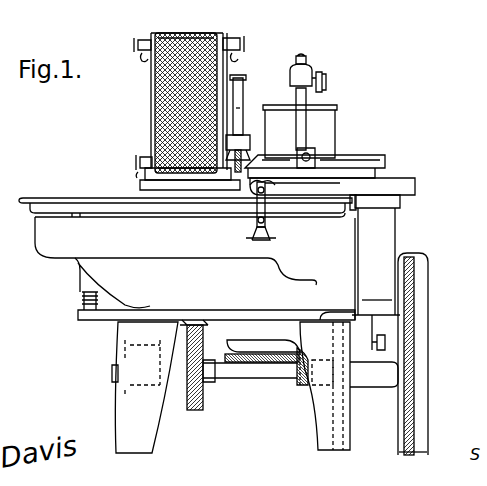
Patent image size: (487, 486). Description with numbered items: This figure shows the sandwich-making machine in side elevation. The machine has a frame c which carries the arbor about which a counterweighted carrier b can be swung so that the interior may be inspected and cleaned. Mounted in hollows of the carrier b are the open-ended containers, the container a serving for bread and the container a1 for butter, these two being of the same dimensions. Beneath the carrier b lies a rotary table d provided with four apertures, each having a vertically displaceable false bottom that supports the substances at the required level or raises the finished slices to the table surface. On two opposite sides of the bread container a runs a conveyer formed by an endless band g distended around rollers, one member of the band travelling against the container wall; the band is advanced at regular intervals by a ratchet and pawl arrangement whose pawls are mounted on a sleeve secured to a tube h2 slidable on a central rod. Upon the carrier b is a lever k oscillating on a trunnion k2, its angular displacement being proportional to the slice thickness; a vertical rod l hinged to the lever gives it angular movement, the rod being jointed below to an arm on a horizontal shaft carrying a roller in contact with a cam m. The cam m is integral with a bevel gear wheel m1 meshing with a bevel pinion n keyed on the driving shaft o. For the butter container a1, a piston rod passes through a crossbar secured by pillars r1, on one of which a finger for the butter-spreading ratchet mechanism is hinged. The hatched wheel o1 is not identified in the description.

The endless band g is at (160, 93).
The container a is at (158, 134).
The tube h2 is at (243, 125).
The lever k is at (248, 143).
The trunnion k2 is at (300, 156).
The pillar r1 is at (296, 106).
The container a1 is at (328, 143).
The carrier b is at (364, 192).
The rotary table d is at (75, 203).
The frame c is at (195, 268).
The cam m is at (248, 348).
The bevel gear wheel m1 is at (262, 380).
The bevel pinion n is at (300, 386).
The driving shaft o is at (240, 372).
The gear wheel o1 is at (192, 372).
The vertical rod l is at (380, 332).